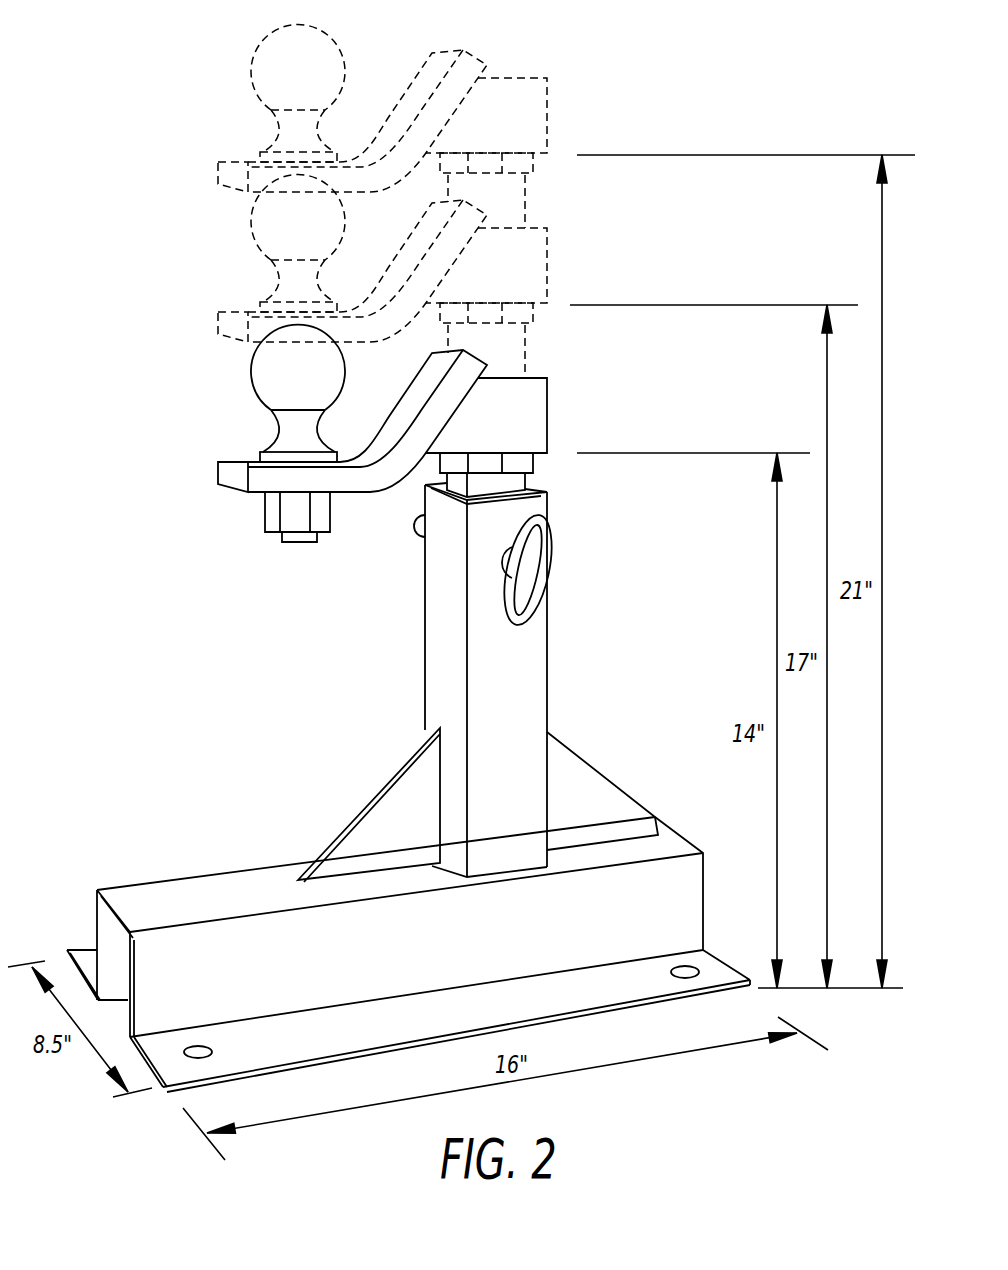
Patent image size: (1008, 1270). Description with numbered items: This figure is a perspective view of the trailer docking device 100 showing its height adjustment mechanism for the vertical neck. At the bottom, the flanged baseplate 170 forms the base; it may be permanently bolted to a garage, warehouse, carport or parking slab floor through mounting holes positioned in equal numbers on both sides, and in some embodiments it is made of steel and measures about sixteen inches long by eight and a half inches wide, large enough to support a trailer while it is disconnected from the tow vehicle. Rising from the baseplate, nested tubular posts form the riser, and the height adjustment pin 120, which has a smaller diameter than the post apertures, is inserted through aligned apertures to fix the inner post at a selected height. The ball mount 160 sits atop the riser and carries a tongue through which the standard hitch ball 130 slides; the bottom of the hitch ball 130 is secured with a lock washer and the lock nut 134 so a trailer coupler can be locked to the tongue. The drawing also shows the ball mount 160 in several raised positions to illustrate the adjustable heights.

The trailer docking device 100 is at (277, 662).
The height adjustment pin 120 is at (543, 568).
The hitch ball 130 is at (305, 383).
The lock nut 134 is at (277, 510).
The ball mount 160 is at (517, 406).
The flanged baseplate 170 is at (723, 953).